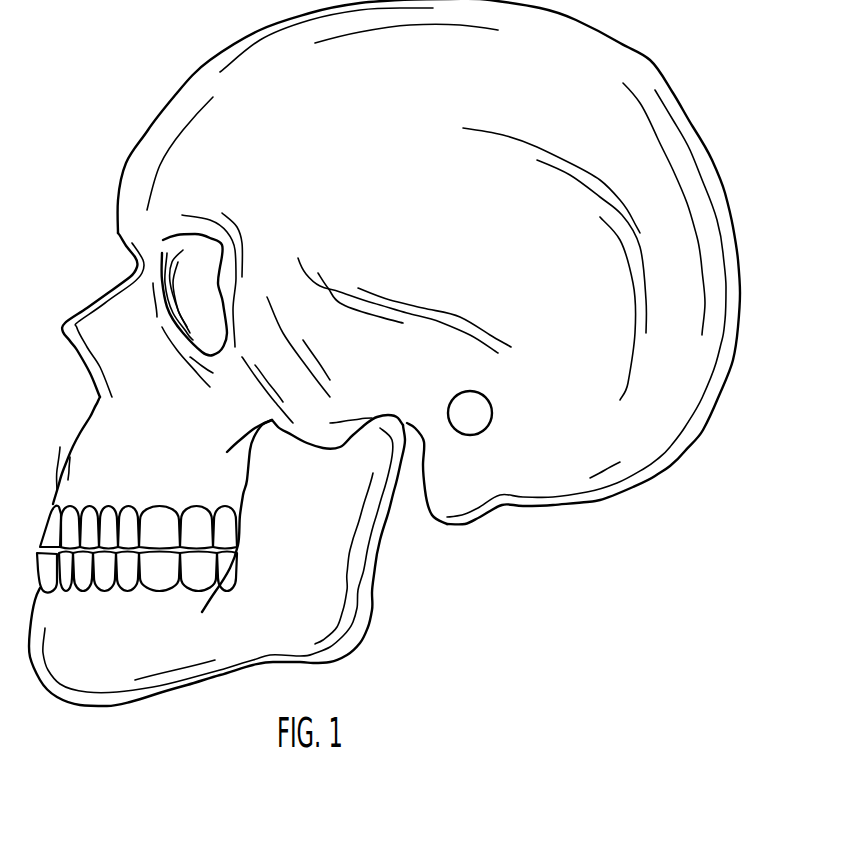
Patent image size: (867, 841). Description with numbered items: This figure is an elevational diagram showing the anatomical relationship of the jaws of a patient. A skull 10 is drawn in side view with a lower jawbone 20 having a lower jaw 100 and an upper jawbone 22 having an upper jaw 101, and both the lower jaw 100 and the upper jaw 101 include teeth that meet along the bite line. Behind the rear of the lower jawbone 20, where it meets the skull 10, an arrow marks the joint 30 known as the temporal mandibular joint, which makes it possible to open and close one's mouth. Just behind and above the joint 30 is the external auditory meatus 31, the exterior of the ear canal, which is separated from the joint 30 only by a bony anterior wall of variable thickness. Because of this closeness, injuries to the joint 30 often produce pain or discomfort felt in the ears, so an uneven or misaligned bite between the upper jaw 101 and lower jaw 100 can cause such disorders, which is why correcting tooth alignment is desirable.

The skull 10 is at (401, 157).
The lower jawbone 20 is at (100, 637).
The upper jawbone 22 is at (160, 483).
The joint 30 is at (404, 421).
The external auditory meatus 31 is at (492, 420).
The lower jaw 100 is at (228, 563).
The upper jaw 101 is at (228, 532).